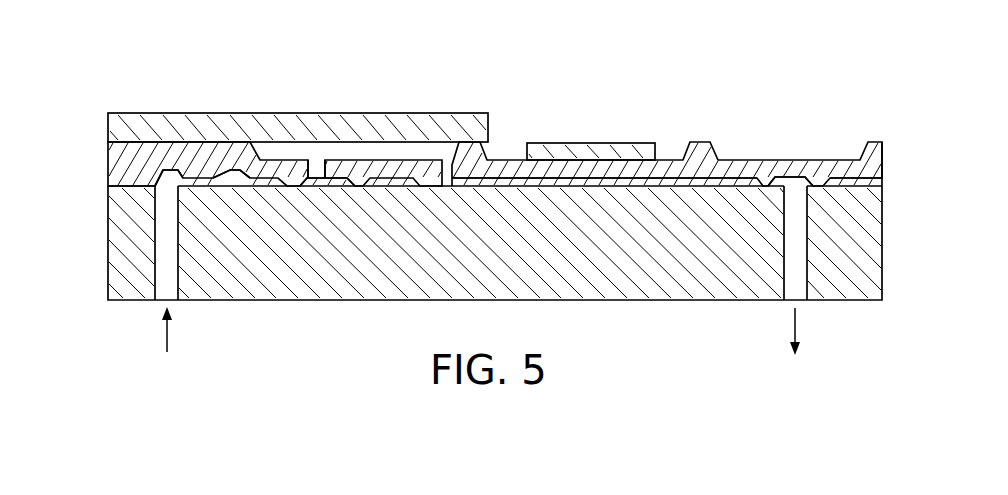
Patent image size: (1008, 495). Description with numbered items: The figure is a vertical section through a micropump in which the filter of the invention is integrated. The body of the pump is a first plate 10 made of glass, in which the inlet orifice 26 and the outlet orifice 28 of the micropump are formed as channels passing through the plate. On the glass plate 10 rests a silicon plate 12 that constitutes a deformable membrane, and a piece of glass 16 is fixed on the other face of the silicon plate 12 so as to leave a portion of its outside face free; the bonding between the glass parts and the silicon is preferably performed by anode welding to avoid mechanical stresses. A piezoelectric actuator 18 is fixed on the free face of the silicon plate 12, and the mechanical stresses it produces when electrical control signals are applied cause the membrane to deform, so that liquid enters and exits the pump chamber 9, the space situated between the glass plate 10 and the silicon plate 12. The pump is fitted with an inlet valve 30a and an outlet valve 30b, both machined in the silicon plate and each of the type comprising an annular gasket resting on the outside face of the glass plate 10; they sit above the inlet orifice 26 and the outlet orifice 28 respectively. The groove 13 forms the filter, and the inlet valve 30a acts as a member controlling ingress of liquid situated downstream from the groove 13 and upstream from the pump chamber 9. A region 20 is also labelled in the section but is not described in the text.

The pump chamber 9 is at (597, 188).
The first plate 10 is at (300, 289).
The silicon plate 12 is at (110, 161).
The groove 13 is at (175, 173).
The piece of glass 16 is at (446, 128).
The piezoelectric actuator 18 is at (633, 152).
The chamber 20 is at (208, 180).
The inlet orifice 26 is at (165, 268).
The outlet orifice 28 is at (795, 268).
The inlet valve 30a is at (342, 171).
The outlet valve 30b is at (796, 174).